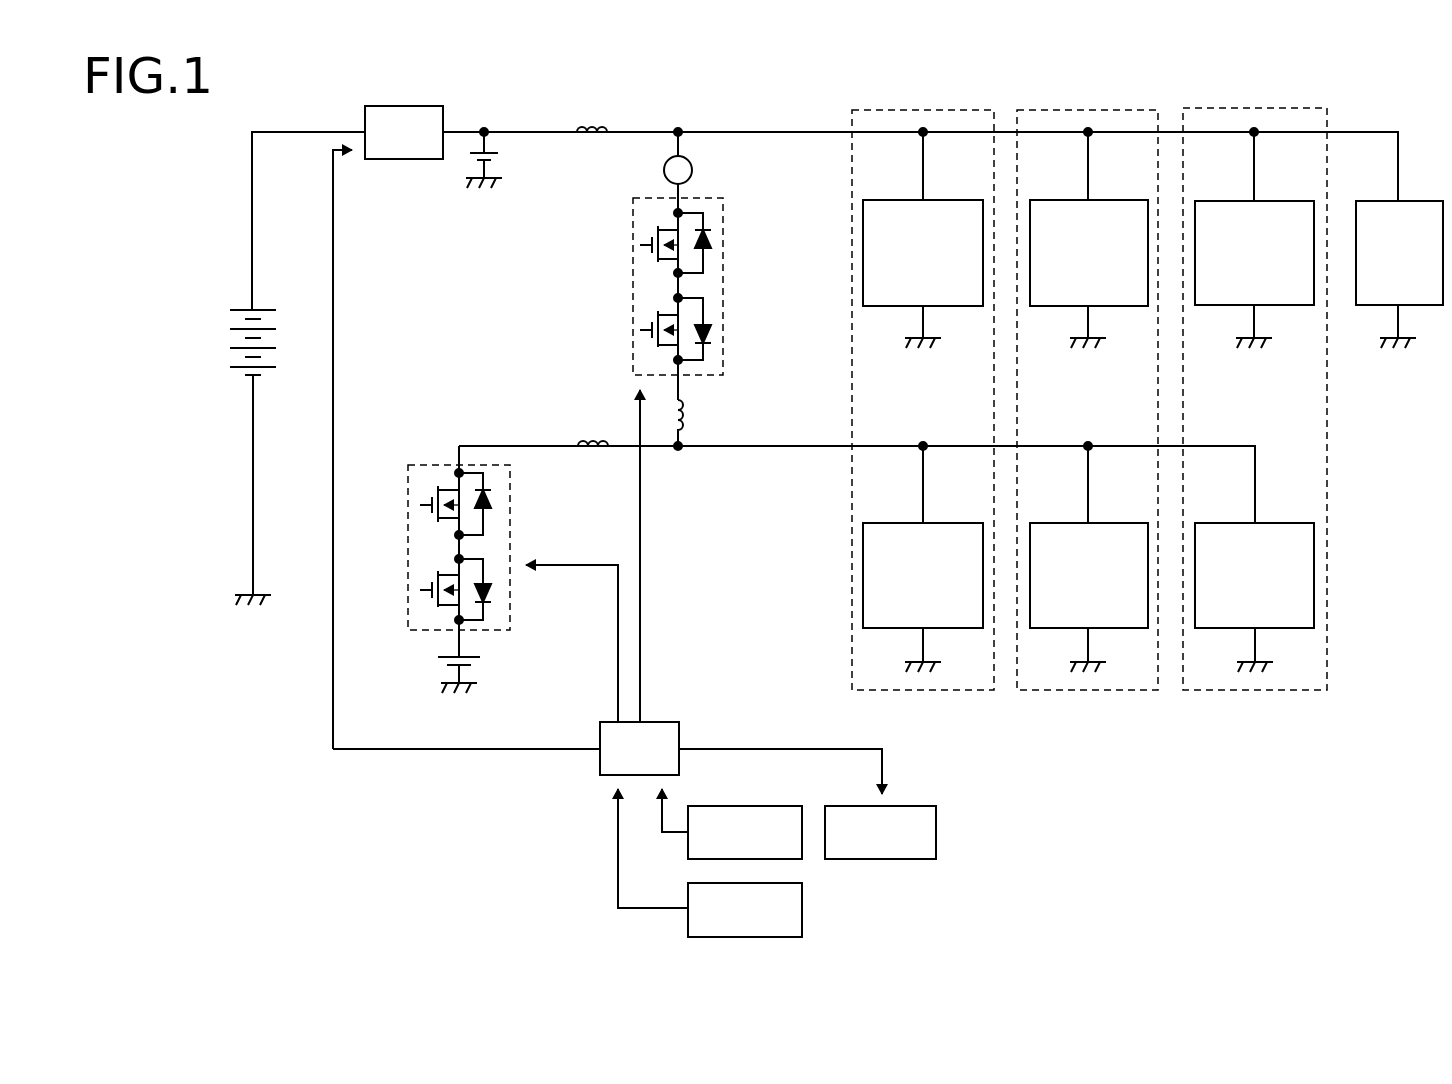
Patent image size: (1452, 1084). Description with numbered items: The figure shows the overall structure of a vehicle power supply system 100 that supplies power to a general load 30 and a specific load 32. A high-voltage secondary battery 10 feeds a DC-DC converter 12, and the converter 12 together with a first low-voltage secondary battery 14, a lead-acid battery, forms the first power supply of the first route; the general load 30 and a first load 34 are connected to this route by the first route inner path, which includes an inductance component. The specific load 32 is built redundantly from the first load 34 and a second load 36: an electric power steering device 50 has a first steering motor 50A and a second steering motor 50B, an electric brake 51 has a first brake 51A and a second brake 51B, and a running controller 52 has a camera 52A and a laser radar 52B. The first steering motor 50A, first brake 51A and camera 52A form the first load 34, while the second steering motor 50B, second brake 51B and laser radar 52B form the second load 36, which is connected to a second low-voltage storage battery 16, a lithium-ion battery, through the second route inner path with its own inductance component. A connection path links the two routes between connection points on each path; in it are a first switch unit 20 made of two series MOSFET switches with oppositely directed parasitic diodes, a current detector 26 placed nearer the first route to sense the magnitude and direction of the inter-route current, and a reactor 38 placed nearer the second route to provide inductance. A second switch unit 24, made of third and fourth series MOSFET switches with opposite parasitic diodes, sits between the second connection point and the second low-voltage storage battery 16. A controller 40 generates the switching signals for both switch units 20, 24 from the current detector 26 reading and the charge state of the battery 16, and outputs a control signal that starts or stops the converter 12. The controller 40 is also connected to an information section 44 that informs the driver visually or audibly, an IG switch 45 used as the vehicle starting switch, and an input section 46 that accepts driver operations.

The power supply system 100 is at (1446, 72).
The high-voltage secondary battery 10 is at (240, 308).
The DC-DC converter 12 is at (380, 106).
The first low-voltage secondary battery 14 is at (498, 142).
The second low-voltage storage battery 16 is at (476, 648).
The first switch unit 20 is at (646, 196).
The second switch unit 24 is at (430, 462).
The current detector 26 is at (693, 170).
The general load 30 is at (1421, 201).
The specific load 32 is at (1396, 388).
The first load 34 is at (1336, 312).
The second load 36 is at (1336, 538).
The reactor 38 is at (688, 416).
The controller 40 is at (681, 735).
The information section 44 is at (907, 806).
The IG switch 45 is at (771, 806).
The input section 46 is at (688, 926).
The electric power steering device 50 is at (960, 108).
The first steering motor 50A is at (941, 200).
The second steering motor 50B is at (941, 523).
The electric brake 51 is at (1125, 108).
The first brake 51A is at (1106, 200).
The second brake 51B is at (1106, 523).
The running controller 52 is at (1290, 106).
The camera 52A is at (1272, 201).
The laser radar 52B is at (1272, 523).